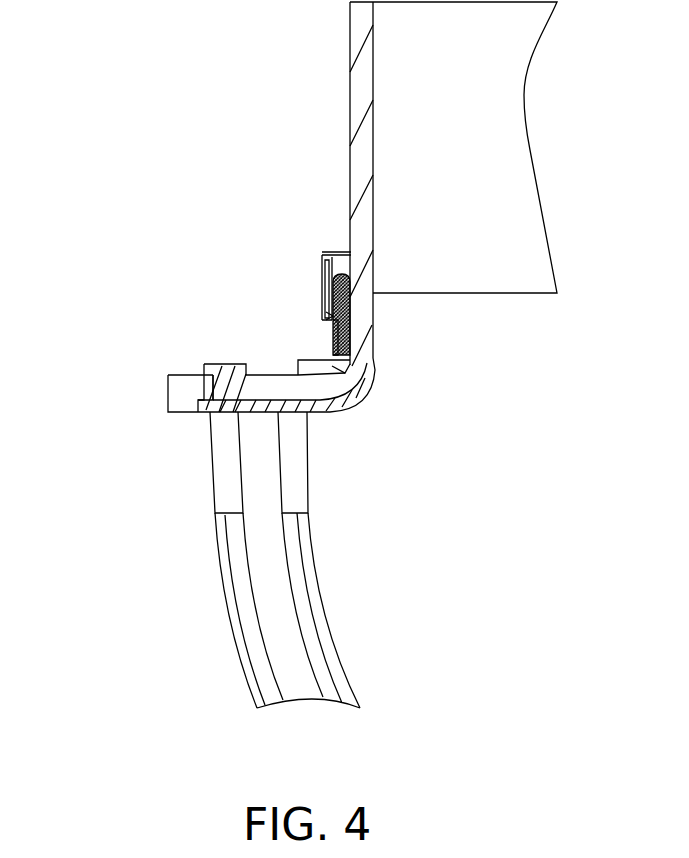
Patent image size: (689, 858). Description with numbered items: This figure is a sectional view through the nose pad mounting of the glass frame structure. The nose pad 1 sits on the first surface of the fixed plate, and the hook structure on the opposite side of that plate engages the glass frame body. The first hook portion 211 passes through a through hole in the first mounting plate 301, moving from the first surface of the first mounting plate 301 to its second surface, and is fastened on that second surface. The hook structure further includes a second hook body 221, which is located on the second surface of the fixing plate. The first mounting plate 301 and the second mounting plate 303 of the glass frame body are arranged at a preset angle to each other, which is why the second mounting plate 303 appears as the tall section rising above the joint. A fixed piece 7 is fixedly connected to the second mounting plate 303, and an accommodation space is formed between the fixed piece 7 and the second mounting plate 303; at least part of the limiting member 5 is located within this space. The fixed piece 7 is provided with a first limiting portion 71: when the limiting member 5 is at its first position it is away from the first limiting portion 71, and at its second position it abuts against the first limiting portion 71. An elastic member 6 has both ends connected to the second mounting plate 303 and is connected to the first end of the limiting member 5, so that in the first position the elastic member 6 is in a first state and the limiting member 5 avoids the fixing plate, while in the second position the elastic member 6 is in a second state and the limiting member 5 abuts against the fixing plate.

The second mounting plate 303 is at (353, 84).
The fixed piece 7 is at (322, 252).
The elastic member 6 is at (322, 262).
The limiting member 5 is at (327, 290).
The first limiting portion 71 is at (330, 313).
The second hook body 221 is at (335, 367).
The first hook portion 211 is at (203, 370).
The first mounting plate 301 is at (173, 405).
The nose pad 1 is at (219, 556).